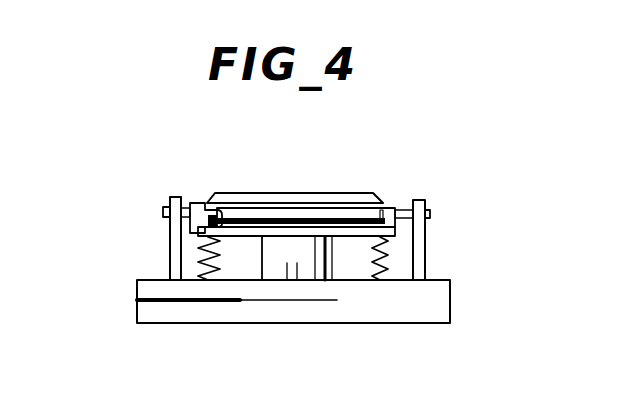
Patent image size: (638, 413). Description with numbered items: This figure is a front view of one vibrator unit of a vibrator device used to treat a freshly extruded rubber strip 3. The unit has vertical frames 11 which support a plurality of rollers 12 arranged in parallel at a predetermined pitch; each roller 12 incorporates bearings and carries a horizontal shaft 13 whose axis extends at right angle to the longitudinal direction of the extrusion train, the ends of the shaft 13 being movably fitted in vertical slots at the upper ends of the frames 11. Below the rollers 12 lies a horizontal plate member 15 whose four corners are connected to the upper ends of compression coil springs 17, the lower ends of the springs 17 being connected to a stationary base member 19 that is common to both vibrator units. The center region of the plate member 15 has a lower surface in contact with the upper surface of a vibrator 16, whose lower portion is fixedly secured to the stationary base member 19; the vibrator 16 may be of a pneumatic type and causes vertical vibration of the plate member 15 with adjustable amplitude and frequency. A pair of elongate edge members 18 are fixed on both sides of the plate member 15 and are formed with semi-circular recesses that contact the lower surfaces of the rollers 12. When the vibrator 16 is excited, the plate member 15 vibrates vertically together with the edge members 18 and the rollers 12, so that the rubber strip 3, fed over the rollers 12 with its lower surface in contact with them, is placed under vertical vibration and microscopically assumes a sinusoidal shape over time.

The rubber strip 3 is at (303, 193).
The frame 11 is at (425, 247).
The roller 12 is at (392, 207).
The horizontal shaft 13 is at (428, 212).
The plate member 15 is at (350, 237).
The vibrator 16 is at (285, 265).
The compression coil spring 17 is at (213, 267).
The edge member 18 is at (228, 236).
The stationary base member 19 is at (415, 323).